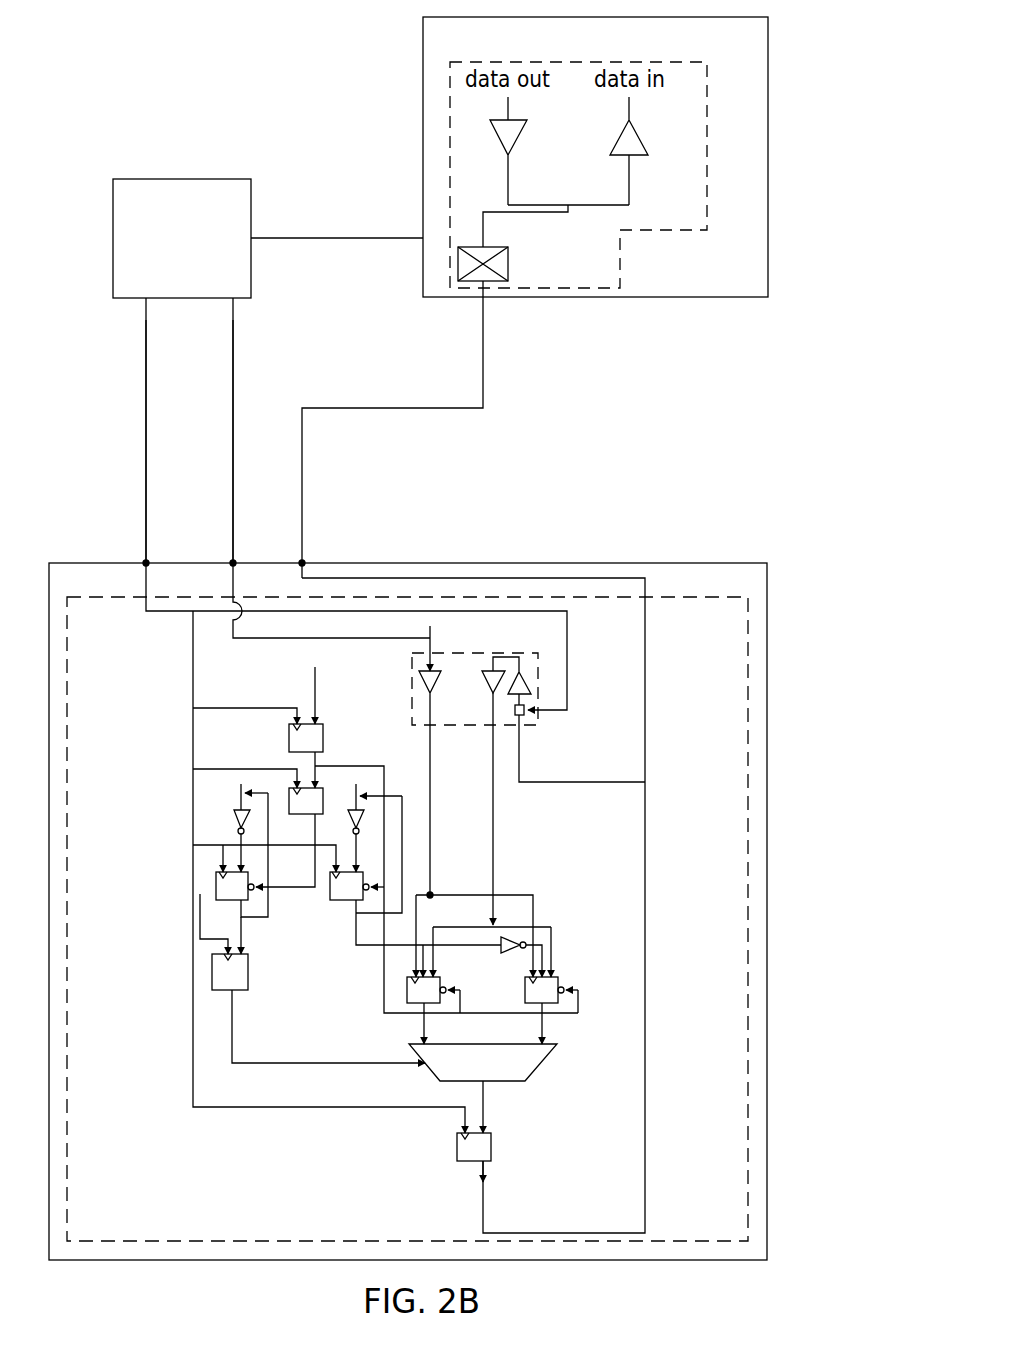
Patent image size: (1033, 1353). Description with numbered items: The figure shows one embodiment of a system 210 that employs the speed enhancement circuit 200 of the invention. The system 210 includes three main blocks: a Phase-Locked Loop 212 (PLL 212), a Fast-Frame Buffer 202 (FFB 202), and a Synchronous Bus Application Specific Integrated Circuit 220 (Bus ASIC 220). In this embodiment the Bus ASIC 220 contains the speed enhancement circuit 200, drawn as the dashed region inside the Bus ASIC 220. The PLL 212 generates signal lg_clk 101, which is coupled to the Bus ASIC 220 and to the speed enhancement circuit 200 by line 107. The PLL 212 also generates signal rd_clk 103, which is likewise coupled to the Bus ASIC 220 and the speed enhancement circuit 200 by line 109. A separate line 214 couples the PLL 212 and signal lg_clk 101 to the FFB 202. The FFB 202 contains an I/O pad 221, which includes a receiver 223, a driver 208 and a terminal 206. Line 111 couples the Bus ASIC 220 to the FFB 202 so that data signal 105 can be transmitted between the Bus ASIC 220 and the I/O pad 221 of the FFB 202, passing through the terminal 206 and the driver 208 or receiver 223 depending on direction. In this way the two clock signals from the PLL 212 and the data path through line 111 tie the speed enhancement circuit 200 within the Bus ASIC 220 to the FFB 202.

The Fast-Frame Buffer 202 is at (595, 157).
The I/O pad 221 is at (739, 168).
The driver 208 is at (519, 136).
The receiver 223 is at (641, 134).
The terminal 206 is at (508, 264).
The Phase-Locked Loop 212 is at (182, 238).
The line 214 is at (337, 225).
The signal lg_clk 101 is at (323, 686).
The signal rd_clk 103 is at (331, 484).
The data signal 105 is at (413, 408).
The line 107 is at (146, 474).
The line 109 is at (233, 474).
The line 111 is at (483, 364).
The system 210 is at (668, 436).
The Synchronous Bus Application Specific Integrated Circuit 220 is at (767, 594).
The speed enhancement circuit 200 is at (748, 1086).